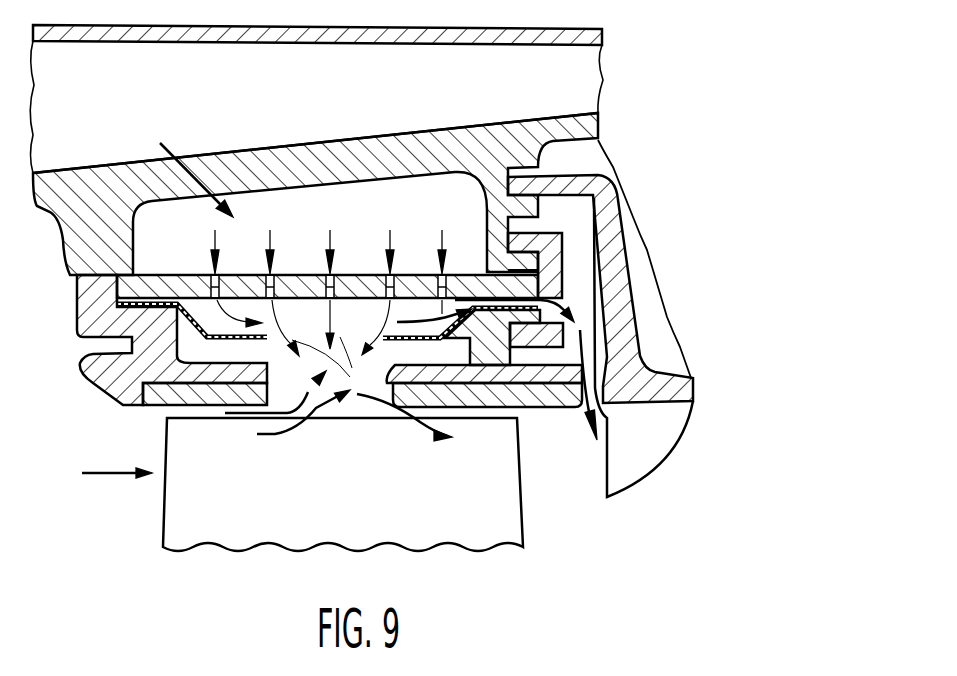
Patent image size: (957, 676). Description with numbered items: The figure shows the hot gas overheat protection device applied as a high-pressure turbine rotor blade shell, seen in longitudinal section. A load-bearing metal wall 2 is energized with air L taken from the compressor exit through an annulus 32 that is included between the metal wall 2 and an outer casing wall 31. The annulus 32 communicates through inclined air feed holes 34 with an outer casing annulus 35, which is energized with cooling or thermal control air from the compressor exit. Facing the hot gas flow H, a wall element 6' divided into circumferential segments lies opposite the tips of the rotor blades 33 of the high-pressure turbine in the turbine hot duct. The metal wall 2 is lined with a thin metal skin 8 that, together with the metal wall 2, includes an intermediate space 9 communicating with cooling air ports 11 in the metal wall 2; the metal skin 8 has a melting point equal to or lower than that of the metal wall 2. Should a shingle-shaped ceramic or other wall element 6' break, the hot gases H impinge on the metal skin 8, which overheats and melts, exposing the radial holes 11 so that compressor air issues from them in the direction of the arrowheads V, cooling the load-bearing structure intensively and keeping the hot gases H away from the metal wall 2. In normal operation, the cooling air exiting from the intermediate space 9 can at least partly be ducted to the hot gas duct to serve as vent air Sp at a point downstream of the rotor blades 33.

The metal wall 2 is at (360, 275).
The wall element 6' is at (167, 357).
The metal skin 8 is at (163, 403).
The intermediate space 9 is at (318, 336).
The cooling air ports 11 is at (247, 270).
The outer casing wall 31 is at (313, 163).
The annulus 32 is at (318, 222).
The rotor blades 33 is at (212, 510).
The inclined air feed holes 34 is at (167, 173).
The outer casing annulus 35 is at (161, 88).
The air L is at (200, 185).
The hot gas flow H is at (387, 400).
The arrowheads V is at (404, 403).
The vent air Sp is at (580, 413).